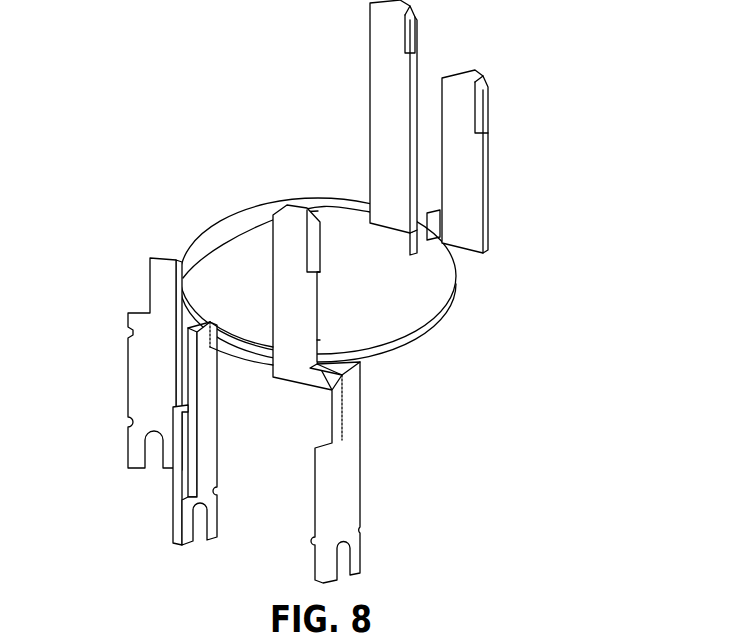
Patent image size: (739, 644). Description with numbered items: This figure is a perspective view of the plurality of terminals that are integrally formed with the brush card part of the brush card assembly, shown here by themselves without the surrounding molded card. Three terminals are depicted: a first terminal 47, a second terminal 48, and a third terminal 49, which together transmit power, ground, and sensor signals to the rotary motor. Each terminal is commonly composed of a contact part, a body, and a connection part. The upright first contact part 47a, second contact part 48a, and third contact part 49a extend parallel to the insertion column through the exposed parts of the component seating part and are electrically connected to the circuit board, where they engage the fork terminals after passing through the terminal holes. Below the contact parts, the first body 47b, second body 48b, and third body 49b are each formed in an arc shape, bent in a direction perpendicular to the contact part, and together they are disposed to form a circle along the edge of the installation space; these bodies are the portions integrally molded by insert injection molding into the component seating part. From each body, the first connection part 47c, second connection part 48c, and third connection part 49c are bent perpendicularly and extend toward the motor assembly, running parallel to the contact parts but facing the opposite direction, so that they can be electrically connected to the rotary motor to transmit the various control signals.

The first terminal 47 is at (300, 298).
The first contact part 47a is at (327, 323).
The first body 47b is at (297, 377).
The first connection part 47c is at (350, 505).
The second terminal 48 is at (493, 187).
The second contact part 48a is at (465, 145).
The second body 48b is at (443, 307).
The second connection part 48c is at (180, 475).
The third terminal 49 is at (368, 107).
The third contact part 49a is at (368, 57).
The third body 49b is at (212, 218).
The third connection part 49c is at (143, 373).